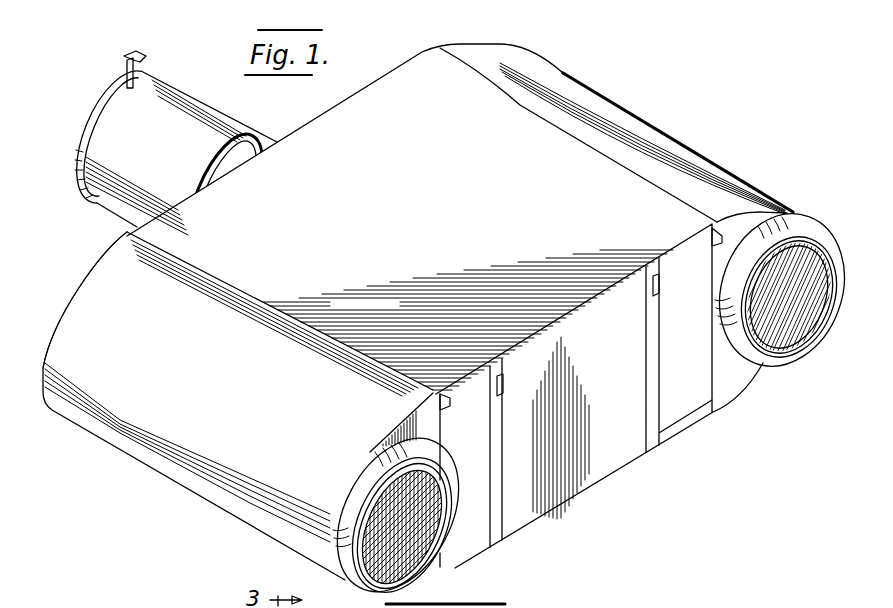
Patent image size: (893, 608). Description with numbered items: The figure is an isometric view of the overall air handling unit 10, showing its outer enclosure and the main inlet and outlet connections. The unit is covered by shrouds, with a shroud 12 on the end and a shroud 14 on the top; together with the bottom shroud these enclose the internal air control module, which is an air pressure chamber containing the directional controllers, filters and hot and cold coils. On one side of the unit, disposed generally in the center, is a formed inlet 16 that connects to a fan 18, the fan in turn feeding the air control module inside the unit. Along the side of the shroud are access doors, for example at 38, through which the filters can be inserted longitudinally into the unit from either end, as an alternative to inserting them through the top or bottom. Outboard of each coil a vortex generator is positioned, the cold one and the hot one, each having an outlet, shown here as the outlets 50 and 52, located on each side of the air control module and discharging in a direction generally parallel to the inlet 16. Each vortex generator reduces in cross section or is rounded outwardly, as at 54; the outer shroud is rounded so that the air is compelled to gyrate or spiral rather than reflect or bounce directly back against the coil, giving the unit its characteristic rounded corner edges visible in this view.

The unit 10 is at (457, 326).
The shroud 12 is at (626, 453).
The shroud 14 is at (346, 126).
The inlet 16 is at (255, 150).
The fan 18 is at (176, 168).
The access doors 38 is at (661, 441).
The outlet 50 is at (355, 497).
The outlet 52 is at (805, 352).
The rounded outer shroud 54 is at (90, 283).